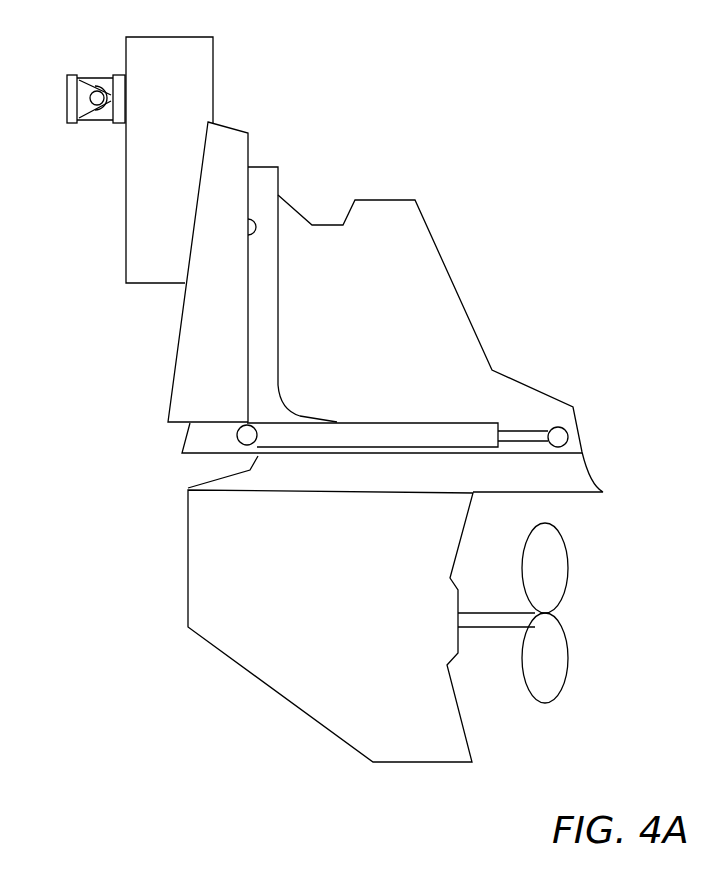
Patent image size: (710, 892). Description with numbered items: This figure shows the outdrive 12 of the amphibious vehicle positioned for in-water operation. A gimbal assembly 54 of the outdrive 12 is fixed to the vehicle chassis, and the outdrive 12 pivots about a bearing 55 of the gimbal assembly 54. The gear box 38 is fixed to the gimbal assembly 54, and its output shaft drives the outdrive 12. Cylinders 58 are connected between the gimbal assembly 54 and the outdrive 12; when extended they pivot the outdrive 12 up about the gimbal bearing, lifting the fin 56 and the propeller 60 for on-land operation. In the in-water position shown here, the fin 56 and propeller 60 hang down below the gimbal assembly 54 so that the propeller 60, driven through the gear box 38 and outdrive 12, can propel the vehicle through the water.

The outdrive 12 is at (475, 173).
The gear box 38 is at (181, 100).
The gimbal assembly 54 is at (263, 182).
The bearing 55 is at (253, 235).
The fin 56 is at (346, 627).
The cylinders 58 is at (463, 438).
The propeller 60 is at (559, 584).